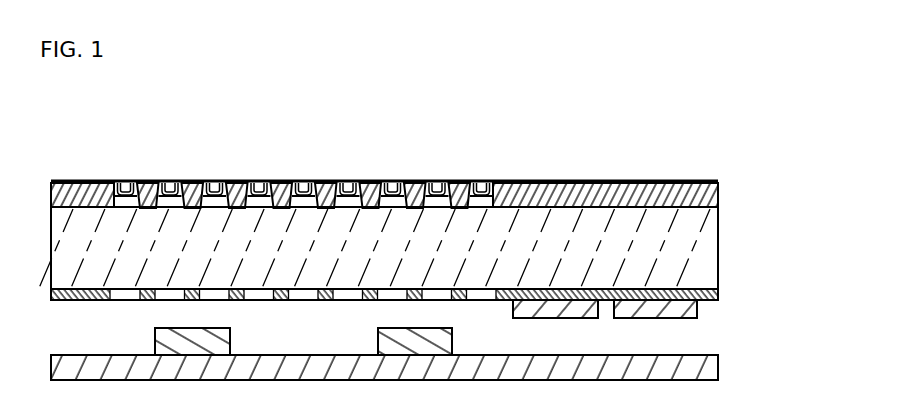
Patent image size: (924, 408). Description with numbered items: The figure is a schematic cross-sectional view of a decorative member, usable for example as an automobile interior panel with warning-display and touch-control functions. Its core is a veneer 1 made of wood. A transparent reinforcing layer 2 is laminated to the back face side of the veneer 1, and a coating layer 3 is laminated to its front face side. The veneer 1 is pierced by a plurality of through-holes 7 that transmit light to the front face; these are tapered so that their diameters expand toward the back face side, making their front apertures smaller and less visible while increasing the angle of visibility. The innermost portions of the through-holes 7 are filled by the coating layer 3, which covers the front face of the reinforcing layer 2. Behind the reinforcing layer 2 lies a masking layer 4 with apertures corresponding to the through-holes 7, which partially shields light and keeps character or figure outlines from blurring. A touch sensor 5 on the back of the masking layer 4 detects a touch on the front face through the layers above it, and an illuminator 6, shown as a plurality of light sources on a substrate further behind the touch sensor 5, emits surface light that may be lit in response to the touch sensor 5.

The veneer 1 is at (718, 196).
The reinforcing layer 2 is at (718, 251).
The coating layer 3 is at (635, 180).
The masking layer 4 is at (718, 298).
The touch sensor 5 is at (697, 314).
The illuminator 6 is at (452, 344).
The through-holes 7 is at (123, 181).